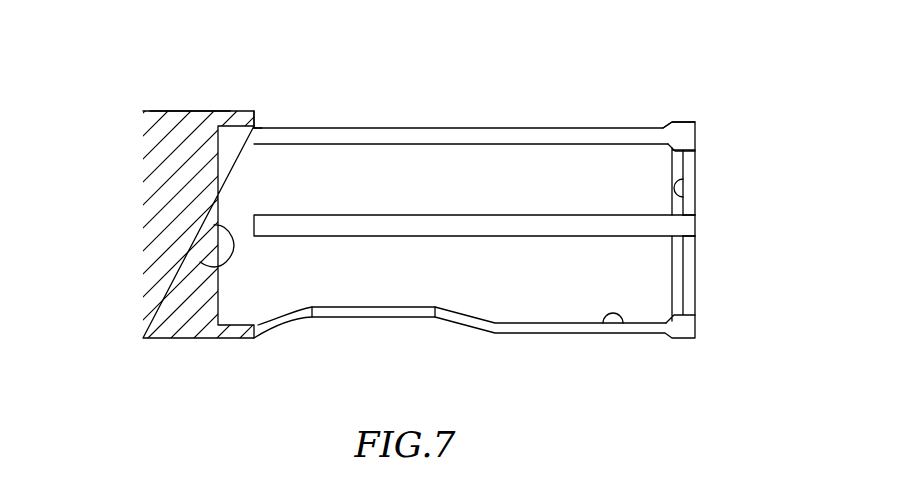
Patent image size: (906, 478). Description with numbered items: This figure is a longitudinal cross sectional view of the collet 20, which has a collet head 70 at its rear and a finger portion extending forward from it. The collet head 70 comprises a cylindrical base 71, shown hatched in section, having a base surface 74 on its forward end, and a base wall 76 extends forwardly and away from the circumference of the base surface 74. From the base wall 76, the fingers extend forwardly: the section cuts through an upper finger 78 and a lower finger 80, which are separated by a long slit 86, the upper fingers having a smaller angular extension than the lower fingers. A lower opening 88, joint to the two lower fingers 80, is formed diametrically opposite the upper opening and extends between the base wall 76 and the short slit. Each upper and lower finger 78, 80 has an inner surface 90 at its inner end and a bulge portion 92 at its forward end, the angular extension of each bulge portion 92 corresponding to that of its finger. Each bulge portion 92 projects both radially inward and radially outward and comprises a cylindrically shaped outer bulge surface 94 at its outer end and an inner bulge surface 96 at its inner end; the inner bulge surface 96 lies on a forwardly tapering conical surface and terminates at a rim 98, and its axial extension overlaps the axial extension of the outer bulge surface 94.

The collet 20 is at (82, 110).
The collet head 70 is at (204, 90).
The cylindrical base 71 is at (184, 111).
The base surface 74 is at (200, 262).
The base wall 76 is at (246, 111).
The upper finger 78 is at (614, 208).
The lower finger 80 is at (616, 291).
The long slit 86 is at (683, 226).
The lower opening 88 is at (398, 332).
The inner surface 90 is at (620, 332).
The bulge portion 92 is at (728, 126).
The outer bulge surface 94 is at (682, 122).
The inner bulge surface 96 is at (672, 151).
The rim 98 is at (688, 203).